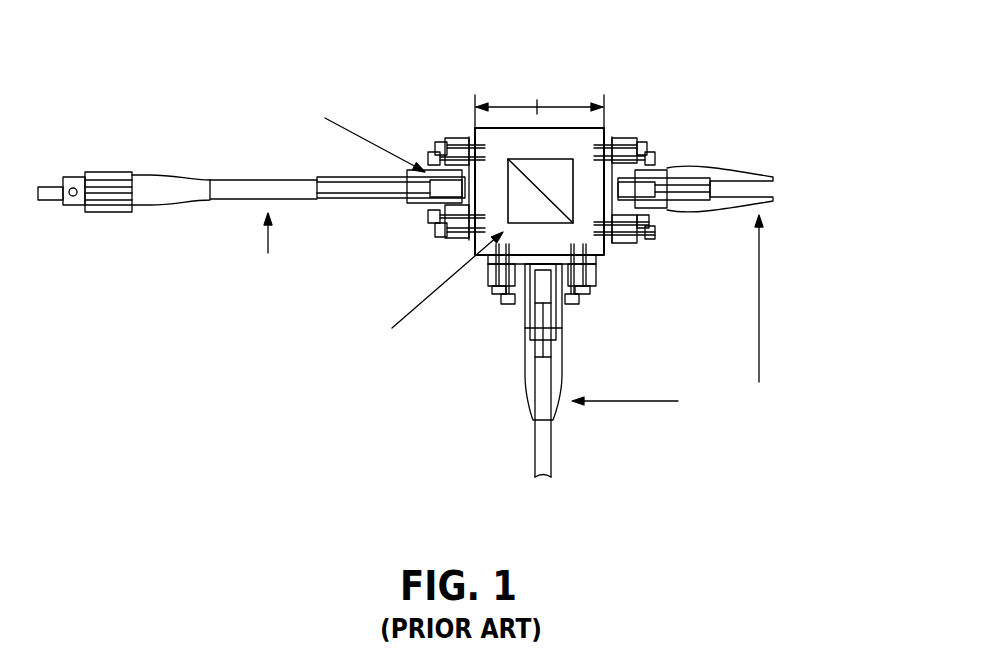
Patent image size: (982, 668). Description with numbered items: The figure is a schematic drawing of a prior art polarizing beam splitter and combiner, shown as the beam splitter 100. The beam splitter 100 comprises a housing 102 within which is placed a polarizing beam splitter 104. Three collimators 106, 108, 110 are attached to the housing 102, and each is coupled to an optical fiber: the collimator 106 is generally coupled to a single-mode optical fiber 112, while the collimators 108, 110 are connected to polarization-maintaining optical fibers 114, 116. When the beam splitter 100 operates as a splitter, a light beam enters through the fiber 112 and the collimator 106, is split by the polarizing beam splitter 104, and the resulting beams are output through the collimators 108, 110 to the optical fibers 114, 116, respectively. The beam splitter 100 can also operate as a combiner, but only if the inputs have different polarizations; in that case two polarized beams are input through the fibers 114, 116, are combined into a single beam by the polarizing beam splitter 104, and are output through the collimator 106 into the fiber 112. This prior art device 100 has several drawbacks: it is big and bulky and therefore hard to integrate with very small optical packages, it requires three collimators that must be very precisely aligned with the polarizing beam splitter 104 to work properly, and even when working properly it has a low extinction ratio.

The beam splitter 100 is at (775, 108).
The housing 102 is at (608, 125).
The polarizing beam splitter 104 is at (567, 200).
The collimator 106 is at (437, 205).
The collimator 108 is at (537, 288).
The collimator 110 is at (642, 188).
The optical fiber 112 is at (237, 192).
The optical fiber 114 is at (542, 459).
The optical fiber 116 is at (765, 188).